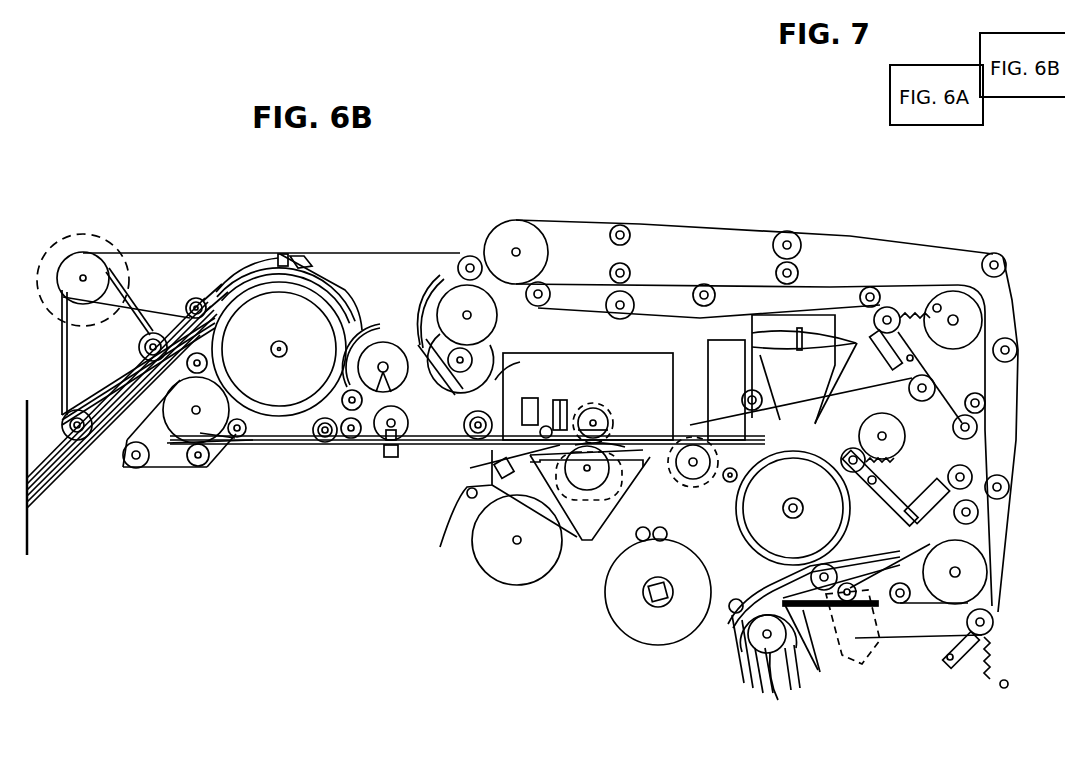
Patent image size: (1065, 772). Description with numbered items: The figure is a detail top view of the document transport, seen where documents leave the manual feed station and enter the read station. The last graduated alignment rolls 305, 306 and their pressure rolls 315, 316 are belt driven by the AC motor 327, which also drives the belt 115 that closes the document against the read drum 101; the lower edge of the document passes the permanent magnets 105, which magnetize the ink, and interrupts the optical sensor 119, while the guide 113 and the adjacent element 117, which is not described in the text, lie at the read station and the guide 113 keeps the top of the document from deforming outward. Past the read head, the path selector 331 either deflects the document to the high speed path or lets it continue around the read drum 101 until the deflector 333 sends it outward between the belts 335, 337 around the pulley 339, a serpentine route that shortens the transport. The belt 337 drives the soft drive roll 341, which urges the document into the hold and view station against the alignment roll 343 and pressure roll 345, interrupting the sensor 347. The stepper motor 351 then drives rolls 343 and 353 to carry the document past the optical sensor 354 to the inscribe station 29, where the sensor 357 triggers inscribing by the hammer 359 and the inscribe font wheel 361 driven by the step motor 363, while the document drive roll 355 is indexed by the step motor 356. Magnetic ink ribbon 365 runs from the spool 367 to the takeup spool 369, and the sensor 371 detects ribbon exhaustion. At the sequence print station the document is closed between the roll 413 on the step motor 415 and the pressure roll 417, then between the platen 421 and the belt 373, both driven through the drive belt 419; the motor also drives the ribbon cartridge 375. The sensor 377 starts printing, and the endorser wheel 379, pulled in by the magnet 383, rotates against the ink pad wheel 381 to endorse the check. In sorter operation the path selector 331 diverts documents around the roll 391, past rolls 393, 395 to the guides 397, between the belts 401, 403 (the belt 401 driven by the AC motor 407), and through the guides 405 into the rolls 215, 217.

The inscribe station 29 is at (646, 390).
The read drum 101 is at (312, 302).
The permanent magnets 105 is at (284, 253).
The guide 113 is at (196, 296).
The belt 115 is at (128, 305).
The cleaning blade 117 is at (172, 300).
The optical sensor 119 is at (306, 256).
The roll 215 is at (778, 692).
The roll 217 is at (742, 622).
The alignment roll 305 is at (62, 470).
The alignment roll 306 is at (138, 346).
The pressure roll 315 is at (96, 445).
The pressure roll 316 is at (150, 382).
The AC motor 327 is at (52, 225).
The path selector 331 is at (336, 404).
The deflector 333 is at (232, 352).
The belt 335 is at (170, 470).
The belt 337 is at (258, 432).
The pulley 339 is at (172, 468).
The soft drive roll 341 is at (320, 442).
The alignment roll 343 is at (373, 436).
The pressure roll 345 is at (393, 452).
The sensor 347 is at (392, 460).
The stepper motor 351 is at (508, 362).
The roll 353 is at (466, 440).
The optical sensor 354 is at (526, 397).
The document drive roll 355 is at (606, 410).
The step motor 356 is at (592, 403).
The sensor 357 is at (610, 423).
The hammer 359 is at (558, 398).
The inscribe font wheel 361 is at (596, 500).
The step motor 363 is at (583, 522).
The ribbon 365 is at (462, 500).
The spool 367 is at (500, 572).
The takeup spool 369 is at (628, 616).
The sensor 371 is at (505, 452).
The belt 373 is at (896, 382).
The ribbon cartridge 375 is at (730, 344).
The sensor 377 is at (866, 392).
The endorser wheel 379 is at (874, 428).
The ink pad wheel 381 is at (902, 440).
The magnet 383 is at (903, 478).
The roll 391 is at (372, 330).
The roll 393 is at (424, 350).
The roll 395 is at (438, 300).
The guides 397 is at (490, 312).
The belt 401 is at (572, 222).
The belt 403 is at (568, 315).
The guides 405 is at (822, 646).
The AC motor 407 is at (851, 660).
The roll 413 is at (686, 481).
The step motor 415 is at (680, 500).
The pressure roll 417 is at (700, 430).
The drive belt 419 is at (718, 485).
The platen 421 is at (774, 546).